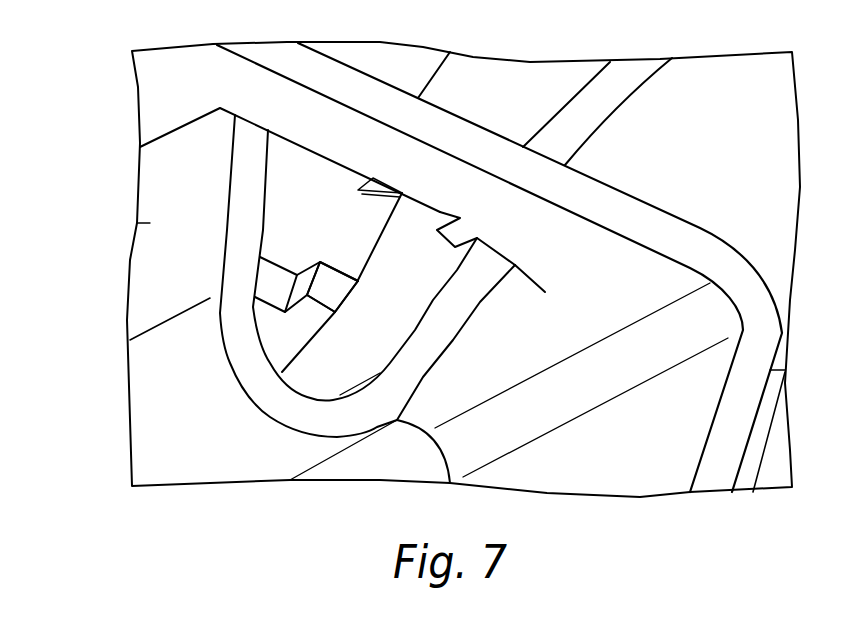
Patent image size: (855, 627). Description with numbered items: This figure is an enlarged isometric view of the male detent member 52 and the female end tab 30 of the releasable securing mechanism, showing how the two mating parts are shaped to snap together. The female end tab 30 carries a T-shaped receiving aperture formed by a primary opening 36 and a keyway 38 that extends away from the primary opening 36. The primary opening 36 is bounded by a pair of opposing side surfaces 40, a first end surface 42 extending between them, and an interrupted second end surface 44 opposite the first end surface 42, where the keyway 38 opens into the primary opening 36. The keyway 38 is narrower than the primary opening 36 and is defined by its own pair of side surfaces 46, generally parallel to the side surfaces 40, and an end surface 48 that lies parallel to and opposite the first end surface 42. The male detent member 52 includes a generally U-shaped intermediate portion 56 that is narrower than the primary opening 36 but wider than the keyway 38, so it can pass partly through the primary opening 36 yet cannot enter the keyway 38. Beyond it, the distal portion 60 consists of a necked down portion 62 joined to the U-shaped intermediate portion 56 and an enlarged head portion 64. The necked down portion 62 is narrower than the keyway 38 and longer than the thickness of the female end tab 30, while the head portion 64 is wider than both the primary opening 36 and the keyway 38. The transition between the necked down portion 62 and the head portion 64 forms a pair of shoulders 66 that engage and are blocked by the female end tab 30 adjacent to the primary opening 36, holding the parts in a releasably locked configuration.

The female end tab 30 is at (160, 84).
The primary opening 36 is at (280, 178).
The keyway 38 is at (340, 260).
The side surfaces 40 is at (330, 158).
The first end surface 42 is at (140, 142).
The interrupted second end surface 44 is at (305, 275).
The side surfaces 46 is at (335, 290).
The end surface 48 is at (545, 292).
The male detent member 52 is at (150, 223).
The U-shaped intermediate portion 56 is at (147, 317).
The distal portion 60 is at (635, 68).
The necked down portion 62 is at (405, 237).
The head portion 64 is at (532, 73).
The shoulders 66 is at (483, 268).